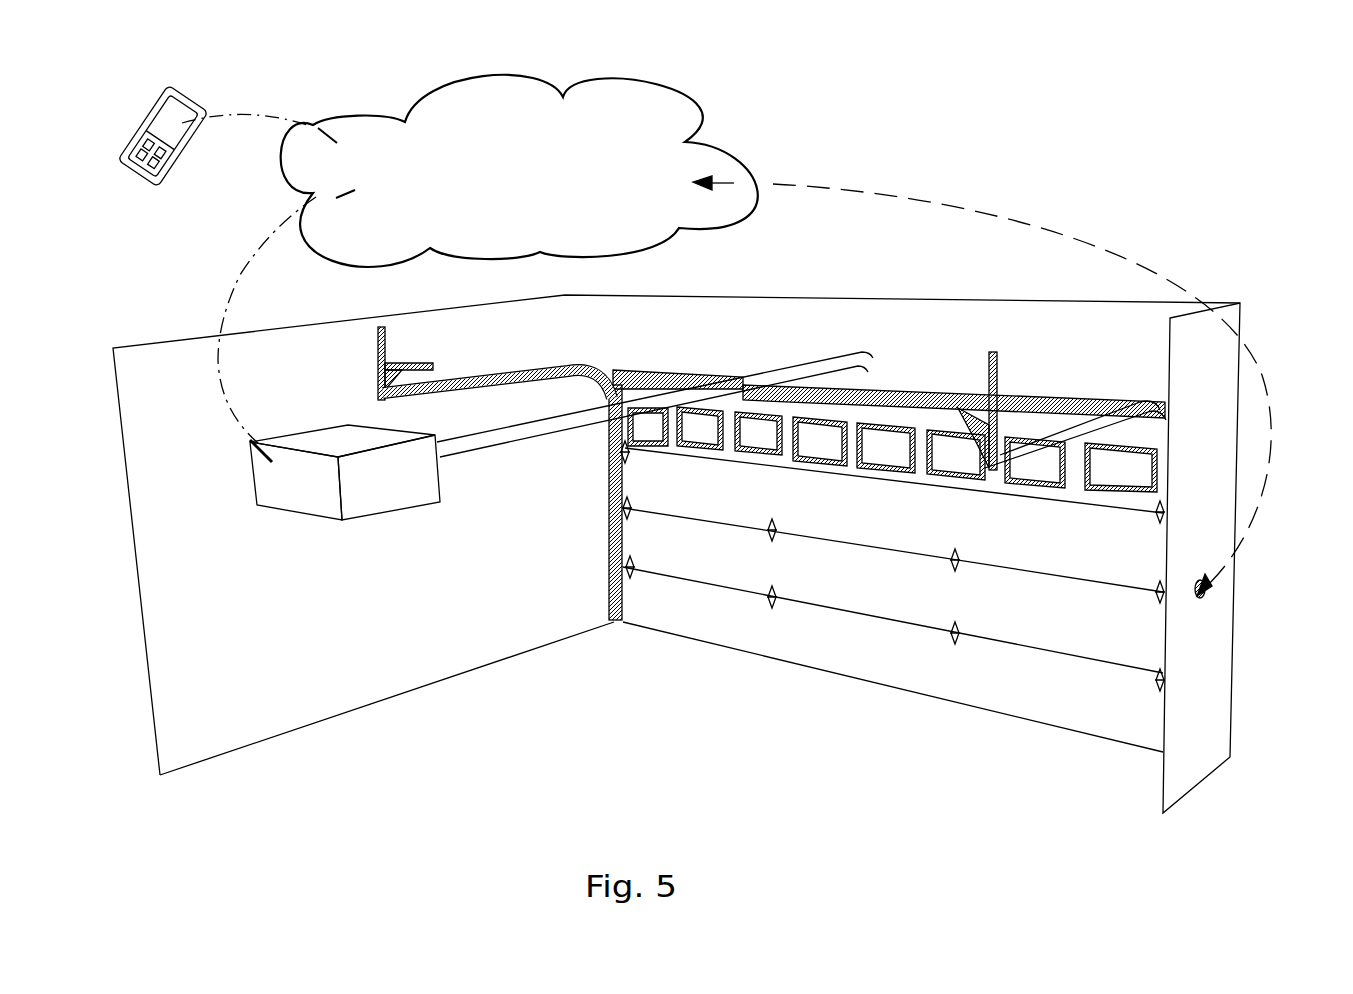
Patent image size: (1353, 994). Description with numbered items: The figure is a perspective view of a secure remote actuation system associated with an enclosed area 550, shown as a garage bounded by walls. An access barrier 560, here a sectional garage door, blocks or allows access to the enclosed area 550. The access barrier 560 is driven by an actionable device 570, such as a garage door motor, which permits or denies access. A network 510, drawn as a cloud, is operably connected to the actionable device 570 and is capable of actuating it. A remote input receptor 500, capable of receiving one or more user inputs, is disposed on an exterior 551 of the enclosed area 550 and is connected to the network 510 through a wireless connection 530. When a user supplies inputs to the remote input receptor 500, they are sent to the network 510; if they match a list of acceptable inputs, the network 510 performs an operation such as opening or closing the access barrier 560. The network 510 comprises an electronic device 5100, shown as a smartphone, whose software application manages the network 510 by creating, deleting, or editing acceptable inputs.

The electronic device 5100 is at (165, 112).
The network 510 is at (519, 171).
The wireless connection 530 is at (996, 218).
The enclosed area 550 is at (647, 791).
The exterior 551 is at (1195, 742).
The access barrier 560 is at (887, 552).
The actionable device 570 is at (386, 481).
The remote input receptor 500 is at (1200, 590).